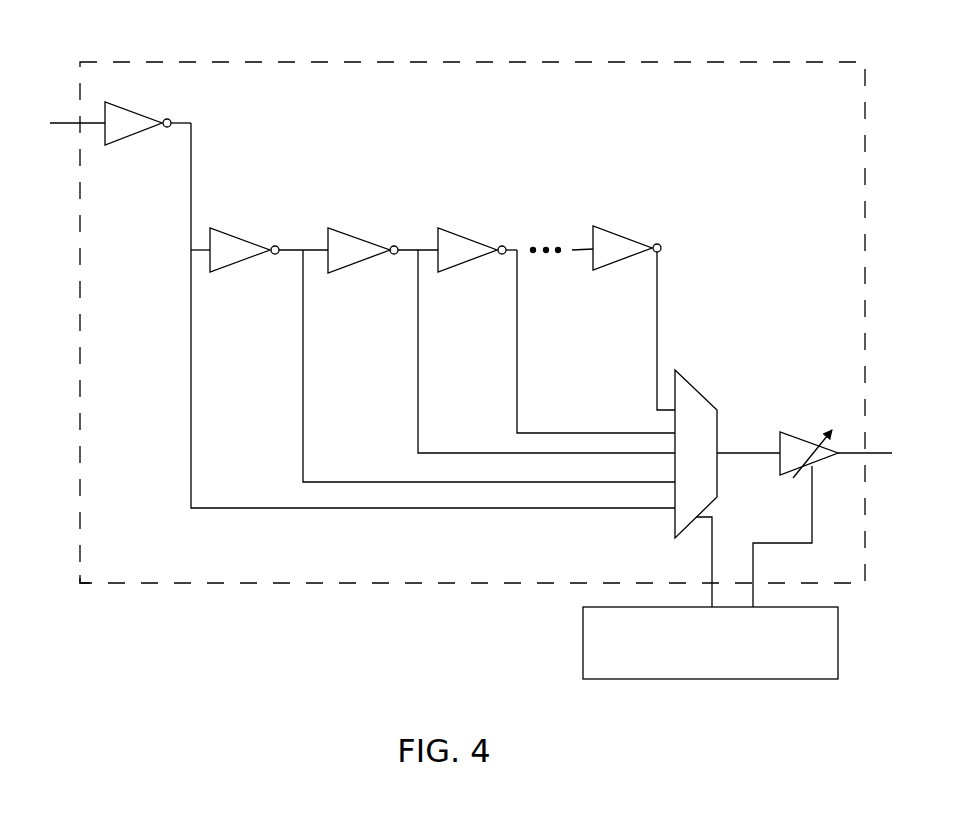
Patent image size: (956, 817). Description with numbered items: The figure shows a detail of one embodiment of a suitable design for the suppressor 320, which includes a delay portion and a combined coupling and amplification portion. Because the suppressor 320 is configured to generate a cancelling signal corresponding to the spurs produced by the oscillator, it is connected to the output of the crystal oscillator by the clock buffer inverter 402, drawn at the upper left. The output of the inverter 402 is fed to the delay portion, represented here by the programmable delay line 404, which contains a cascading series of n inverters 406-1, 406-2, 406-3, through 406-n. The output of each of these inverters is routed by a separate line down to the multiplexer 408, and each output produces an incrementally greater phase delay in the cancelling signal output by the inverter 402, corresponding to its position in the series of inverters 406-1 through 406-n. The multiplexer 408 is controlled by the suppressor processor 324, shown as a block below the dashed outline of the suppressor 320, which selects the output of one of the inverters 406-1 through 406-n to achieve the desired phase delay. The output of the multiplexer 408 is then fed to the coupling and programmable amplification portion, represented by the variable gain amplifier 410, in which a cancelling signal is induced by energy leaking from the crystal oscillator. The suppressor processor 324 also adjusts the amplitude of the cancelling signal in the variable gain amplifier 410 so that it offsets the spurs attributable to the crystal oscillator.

The suppressor 320 is at (378, 62).
The clock buffer inverter 402 is at (130, 110).
The programmable delay line 404 is at (457, 178).
The inverter 406-1 is at (238, 238).
The inverter 406-2 is at (352, 235).
The inverter 406-3 is at (458, 236).
The inverter 406-n is at (620, 233).
The multiplexer 408 is at (698, 389).
The variable gain amplifier (VGA) 410 is at (782, 435).
The suppressor processor 324 is at (710, 643).